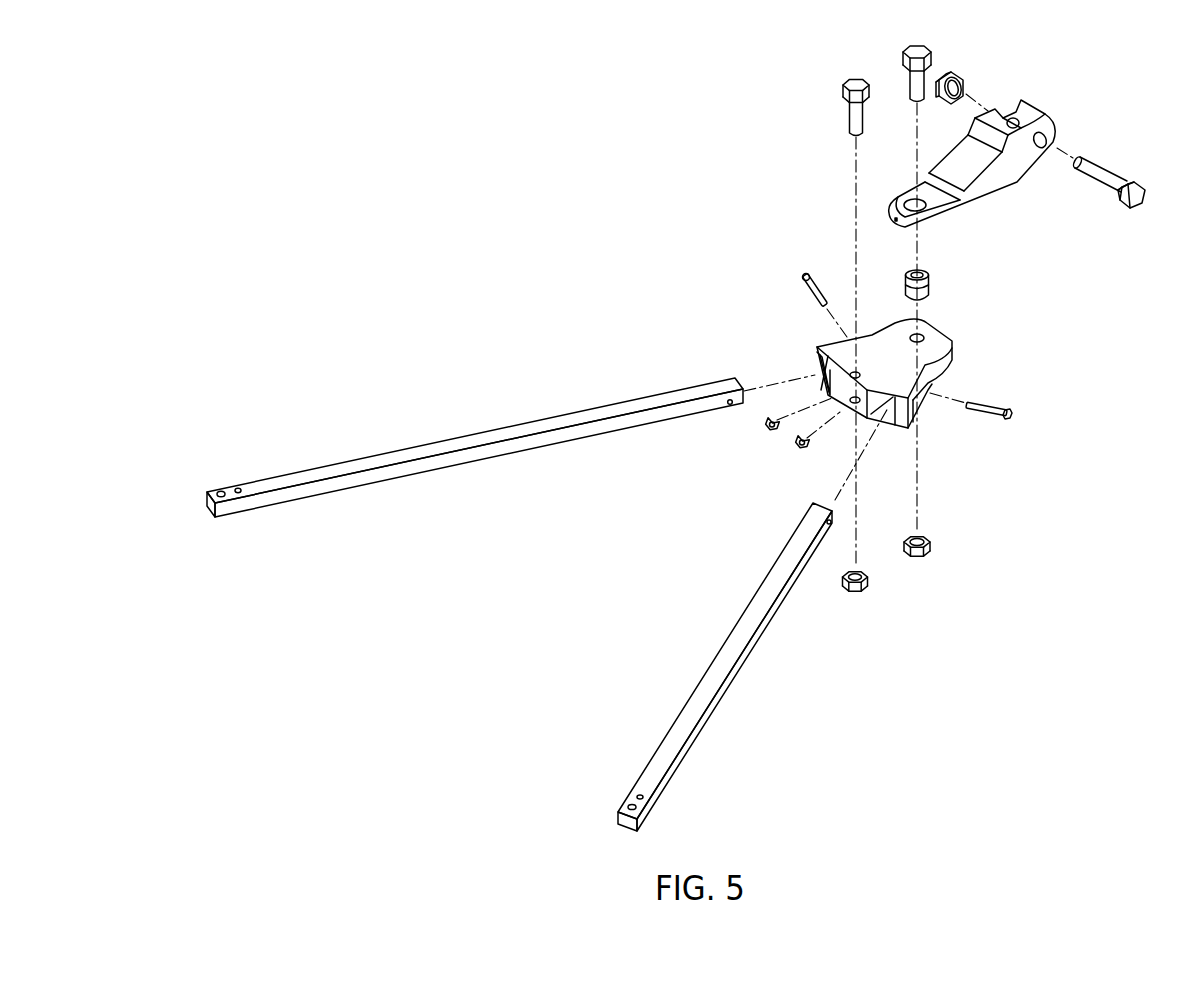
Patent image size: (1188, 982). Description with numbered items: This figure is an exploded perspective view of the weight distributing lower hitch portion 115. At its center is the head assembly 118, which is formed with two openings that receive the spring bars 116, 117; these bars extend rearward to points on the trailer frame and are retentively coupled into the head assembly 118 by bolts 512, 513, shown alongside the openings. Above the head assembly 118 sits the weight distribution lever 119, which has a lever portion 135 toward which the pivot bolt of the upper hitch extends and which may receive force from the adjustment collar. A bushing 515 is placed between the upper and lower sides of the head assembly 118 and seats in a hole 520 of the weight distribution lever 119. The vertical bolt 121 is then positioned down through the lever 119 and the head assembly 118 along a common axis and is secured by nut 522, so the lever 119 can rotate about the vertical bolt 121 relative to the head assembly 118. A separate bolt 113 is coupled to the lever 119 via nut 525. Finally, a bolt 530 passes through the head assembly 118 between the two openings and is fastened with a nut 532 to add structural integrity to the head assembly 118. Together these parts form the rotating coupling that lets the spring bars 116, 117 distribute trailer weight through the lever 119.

The bolt 113 is at (1108, 167).
The lower hitch portion 115 is at (523, 144).
The spring bar 116 is at (470, 432).
The spring bar 117 is at (716, 655).
The head assembly 118 is at (937, 325).
The weight distribution lever 119 is at (1023, 183).
The vertical bolt 121 is at (913, 45).
The lever portion 135 is at (963, 175).
The bolt 512 is at (985, 399).
The bolt 513 is at (810, 297).
The bushing 515 is at (930, 283).
The hole 520 is at (920, 207).
The nut 522 is at (931, 542).
The nut 525 is at (965, 78).
The bolt 530 is at (852, 78).
The nut 532 is at (870, 578).